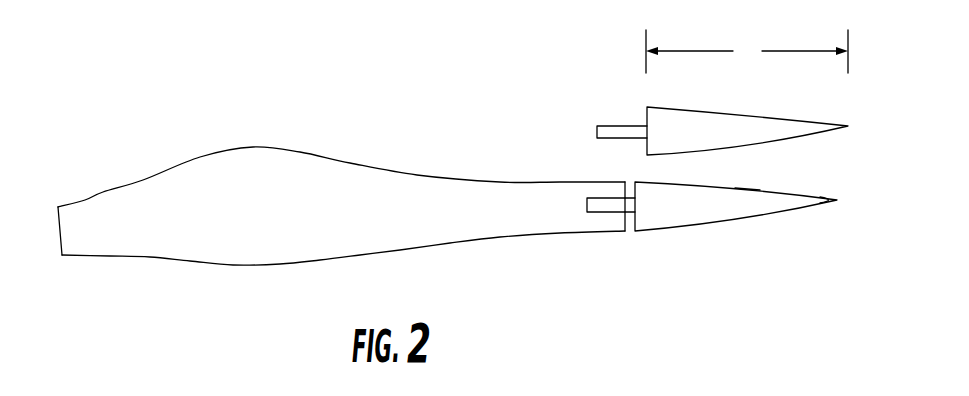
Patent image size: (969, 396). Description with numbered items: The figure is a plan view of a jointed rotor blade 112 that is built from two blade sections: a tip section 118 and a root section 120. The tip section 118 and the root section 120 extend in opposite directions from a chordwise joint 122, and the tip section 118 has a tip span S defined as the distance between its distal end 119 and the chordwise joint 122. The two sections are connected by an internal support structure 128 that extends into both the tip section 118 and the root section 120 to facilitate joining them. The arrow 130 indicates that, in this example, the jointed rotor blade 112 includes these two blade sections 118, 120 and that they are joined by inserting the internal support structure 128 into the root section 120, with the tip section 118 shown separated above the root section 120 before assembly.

The jointed rotor blade 112 is at (116, 82).
The tip section 118 is at (748, 213).
The distal end 119 is at (839, 214).
The root section 120 is at (150, 256).
The chordwise joint 122 is at (631, 233).
The internal support structure 128 is at (615, 126).
The arrow 130 is at (748, 181).